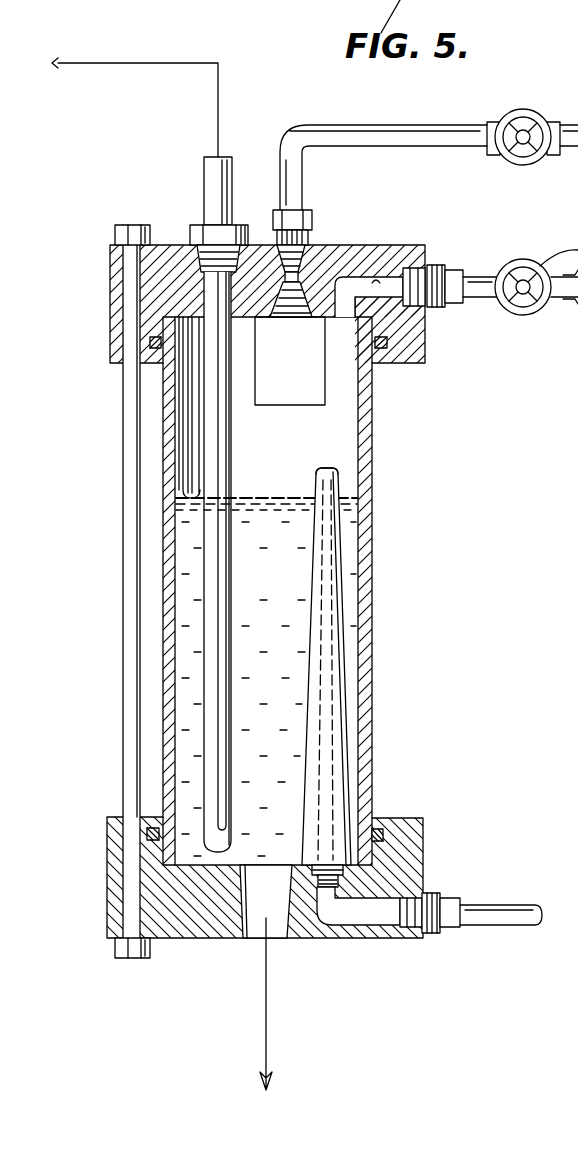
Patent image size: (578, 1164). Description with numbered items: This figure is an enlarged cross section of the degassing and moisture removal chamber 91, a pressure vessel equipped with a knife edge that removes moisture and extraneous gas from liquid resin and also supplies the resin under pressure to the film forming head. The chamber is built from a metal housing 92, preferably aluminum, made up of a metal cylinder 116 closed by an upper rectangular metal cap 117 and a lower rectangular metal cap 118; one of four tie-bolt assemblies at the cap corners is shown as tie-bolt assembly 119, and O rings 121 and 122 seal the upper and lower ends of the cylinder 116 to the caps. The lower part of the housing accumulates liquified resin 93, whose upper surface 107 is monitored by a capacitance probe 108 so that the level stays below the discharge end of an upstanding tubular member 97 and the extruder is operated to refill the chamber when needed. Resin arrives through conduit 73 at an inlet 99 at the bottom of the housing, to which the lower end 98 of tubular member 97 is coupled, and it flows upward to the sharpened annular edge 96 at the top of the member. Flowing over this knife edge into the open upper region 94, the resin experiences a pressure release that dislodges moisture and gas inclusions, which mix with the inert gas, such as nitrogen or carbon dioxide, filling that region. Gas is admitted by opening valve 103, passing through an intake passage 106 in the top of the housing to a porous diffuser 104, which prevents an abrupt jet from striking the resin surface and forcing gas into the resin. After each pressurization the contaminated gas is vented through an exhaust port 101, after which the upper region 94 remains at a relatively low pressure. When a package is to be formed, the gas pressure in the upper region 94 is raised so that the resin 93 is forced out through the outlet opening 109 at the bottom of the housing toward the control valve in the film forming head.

The conduit 73 is at (513, 910).
The degassing and moisture removal chamber 91 is at (97, 458).
The metal housing 92 is at (390, 566).
The liquified resin 93 is at (266, 677).
The upper region 94 is at (271, 433).
The sharpened annular edge 96 is at (330, 468).
The upstanding tubular member 97 is at (350, 679).
The lower end 98 is at (305, 862).
The inlet 99 is at (349, 915).
The exhaust port 101 is at (378, 282).
The valve 103 is at (527, 160).
The porous diffuser 104 is at (298, 380).
The intake passage 106 is at (302, 277).
The upper surface 107 is at (193, 484).
The capacitance probe 108 is at (213, 592).
The outlet opening 109 is at (253, 922).
The metal cylinder 116 is at (370, 604).
The upper rectangular metal cap 117 is at (117, 282).
The lower rectangular metal cap 118 is at (115, 891).
The tie-bolt assembly 119 is at (123, 704).
The O ring 121 is at (387, 343).
The O ring 122 is at (383, 836).